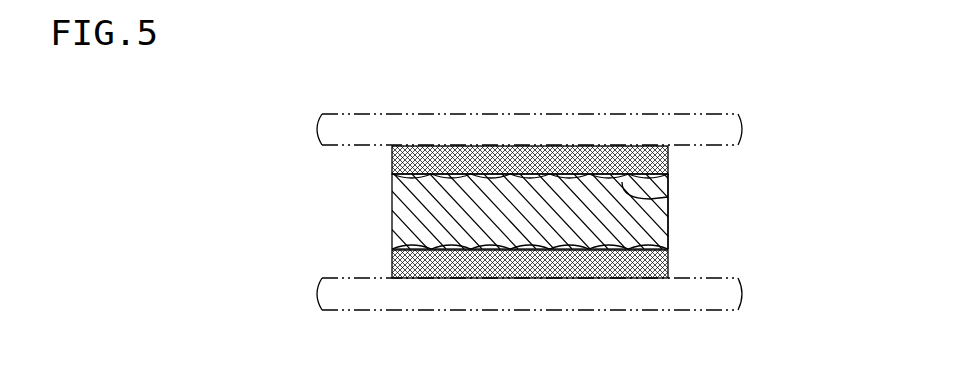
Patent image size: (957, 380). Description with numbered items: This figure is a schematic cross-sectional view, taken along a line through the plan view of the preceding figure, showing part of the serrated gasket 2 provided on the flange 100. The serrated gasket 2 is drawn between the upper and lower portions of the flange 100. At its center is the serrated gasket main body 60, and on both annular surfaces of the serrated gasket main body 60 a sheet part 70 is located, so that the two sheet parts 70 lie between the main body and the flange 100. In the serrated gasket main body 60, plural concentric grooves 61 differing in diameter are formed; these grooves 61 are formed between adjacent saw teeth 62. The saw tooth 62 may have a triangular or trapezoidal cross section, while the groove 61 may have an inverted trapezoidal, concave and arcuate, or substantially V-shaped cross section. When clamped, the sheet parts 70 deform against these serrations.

The flange 100 is at (738, 130).
The sheet part 70 is at (392, 160).
The serrated gasket main body 60 is at (392, 215).
The groove 61 is at (668, 200).
The saw tooth 62 is at (668, 185).
The serrated gasket 2 is at (750, 215).